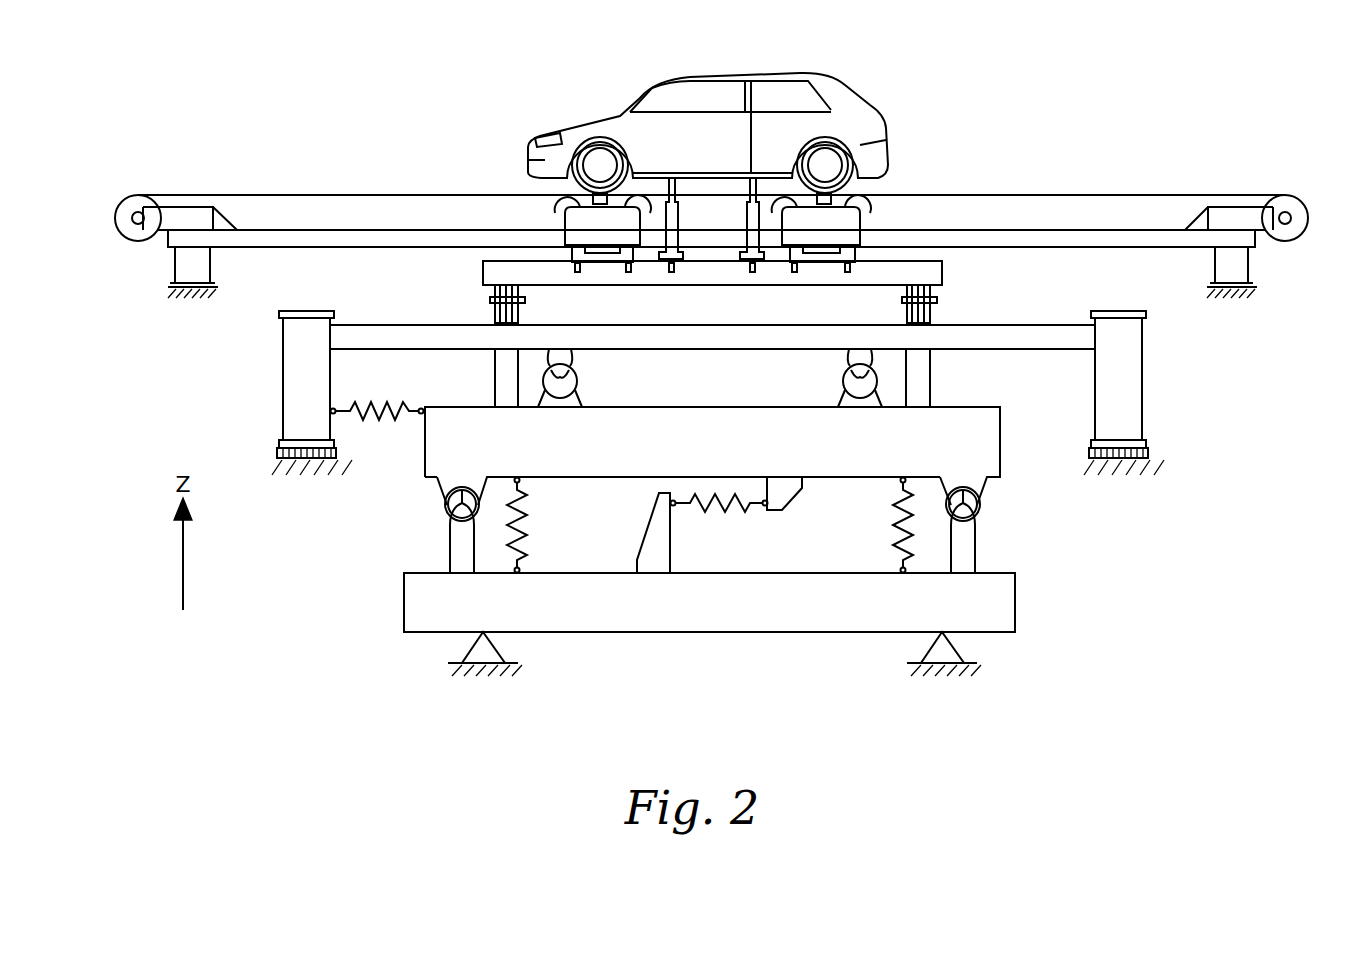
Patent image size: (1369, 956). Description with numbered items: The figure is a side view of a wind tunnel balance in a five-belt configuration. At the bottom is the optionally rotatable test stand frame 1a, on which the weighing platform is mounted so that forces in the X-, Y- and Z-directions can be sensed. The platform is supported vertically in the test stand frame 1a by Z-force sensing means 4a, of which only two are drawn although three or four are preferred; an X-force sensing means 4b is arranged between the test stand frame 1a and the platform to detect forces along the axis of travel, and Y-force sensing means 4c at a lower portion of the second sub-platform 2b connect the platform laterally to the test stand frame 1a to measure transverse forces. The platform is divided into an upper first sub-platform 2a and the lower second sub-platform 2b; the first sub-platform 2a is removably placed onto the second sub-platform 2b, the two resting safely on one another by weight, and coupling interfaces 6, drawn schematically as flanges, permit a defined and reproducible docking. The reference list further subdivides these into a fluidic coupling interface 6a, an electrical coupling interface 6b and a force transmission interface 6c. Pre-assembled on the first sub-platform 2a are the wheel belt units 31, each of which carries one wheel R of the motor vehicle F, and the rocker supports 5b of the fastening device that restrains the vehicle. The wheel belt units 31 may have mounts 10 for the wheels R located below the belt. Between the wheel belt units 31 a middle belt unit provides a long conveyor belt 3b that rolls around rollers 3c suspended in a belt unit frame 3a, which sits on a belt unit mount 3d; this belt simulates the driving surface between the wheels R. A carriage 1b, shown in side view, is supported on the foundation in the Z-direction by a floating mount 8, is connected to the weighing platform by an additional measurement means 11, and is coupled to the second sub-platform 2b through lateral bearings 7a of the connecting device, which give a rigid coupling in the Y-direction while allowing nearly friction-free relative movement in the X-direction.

The test stand frame 1a is at (1012, 606).
The carriage 1b is at (1134, 382).
The first sub-platform 2a is at (942, 274).
The second sub-platform 2b is at (971, 437).
The belt unit frame 3a is at (226, 236).
The conveyor belt 3b is at (306, 194).
The rollers 3c is at (127, 208).
The belt unit mount 3d is at (182, 264).
The Z-force sensing means 4a is at (528, 522).
The X-force sensing means 4b is at (715, 513).
The Y-force sensing means 4c is at (447, 507).
The rocker supports 5b is at (670, 200).
The coupling interface 6 is at (490, 300).
The fluidic coupling interface 6a is at (497, 288).
The electrical coupling interface 6b is at (519, 311).
The force transmission interface 6c is at (517, 318).
The lateral bearings 7a is at (972, 382).
The floating mount 8 is at (277, 449).
The mount for wheel 10 is at (570, 196).
The disturbing-force sensing means 11 is at (376, 420).
The wheel belt unit 31 is at (575, 221).
The motor vehicle F is at (850, 117).
The wheel R is at (600, 163).